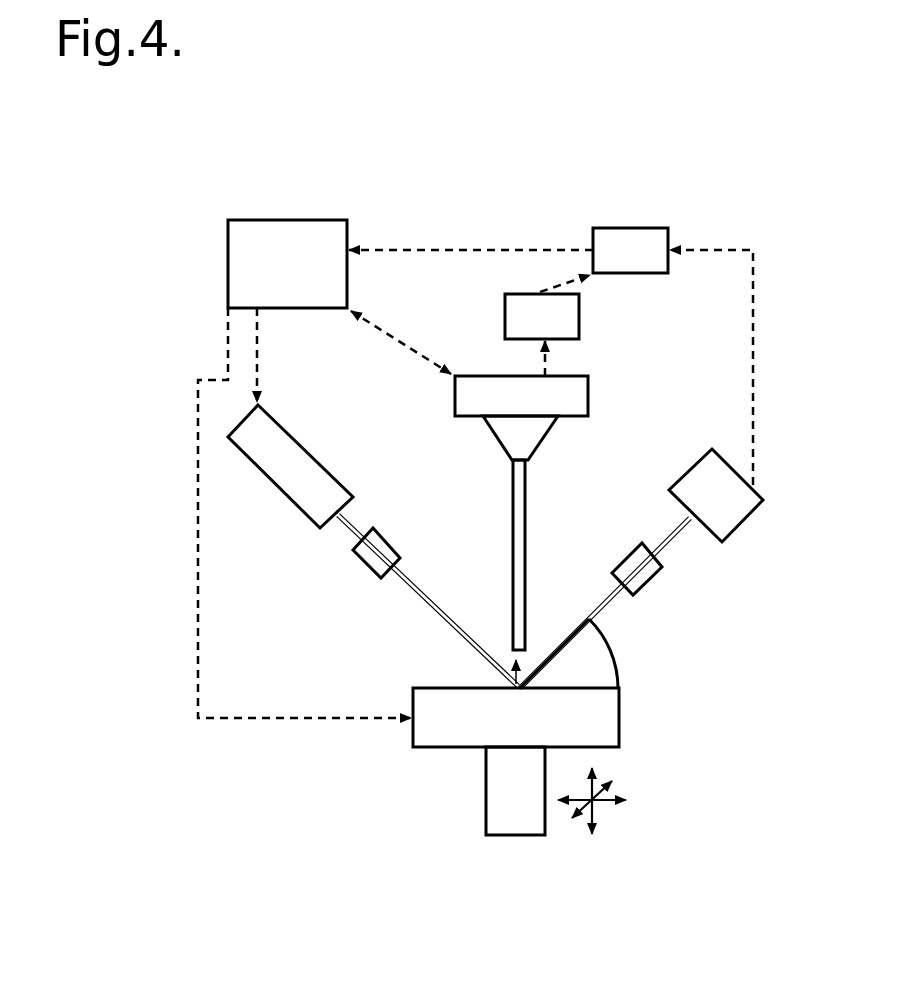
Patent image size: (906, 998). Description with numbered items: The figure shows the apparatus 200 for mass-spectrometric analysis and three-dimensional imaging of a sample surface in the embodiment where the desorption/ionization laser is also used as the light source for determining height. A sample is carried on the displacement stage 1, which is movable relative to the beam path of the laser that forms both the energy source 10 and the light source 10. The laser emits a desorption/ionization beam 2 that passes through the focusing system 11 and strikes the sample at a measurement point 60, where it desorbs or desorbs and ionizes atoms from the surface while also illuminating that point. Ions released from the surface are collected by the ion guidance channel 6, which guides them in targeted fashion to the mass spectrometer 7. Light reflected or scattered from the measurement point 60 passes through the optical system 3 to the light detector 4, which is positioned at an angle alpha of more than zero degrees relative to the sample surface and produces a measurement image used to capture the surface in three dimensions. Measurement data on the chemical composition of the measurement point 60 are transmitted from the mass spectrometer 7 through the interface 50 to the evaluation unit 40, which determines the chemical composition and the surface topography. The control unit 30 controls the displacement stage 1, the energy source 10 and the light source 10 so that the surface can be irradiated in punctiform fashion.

The apparatus 200 is at (337, 200).
The control unit 30 is at (300, 310).
The evaluation unit 40 is at (632, 276).
The interface 50 is at (503, 317).
The mass spectrometer 7 is at (591, 397).
The ion guidance channel 6 is at (528, 537).
The energy source and light source 10 is at (310, 447).
The focusing system 11 is at (361, 565).
The desorption/ionization beam 2 is at (423, 608).
The measurement point 60 is at (509, 685).
The displacement stage 1 is at (622, 718).
The optical system 3 is at (650, 586).
The light detector 4 is at (709, 536).